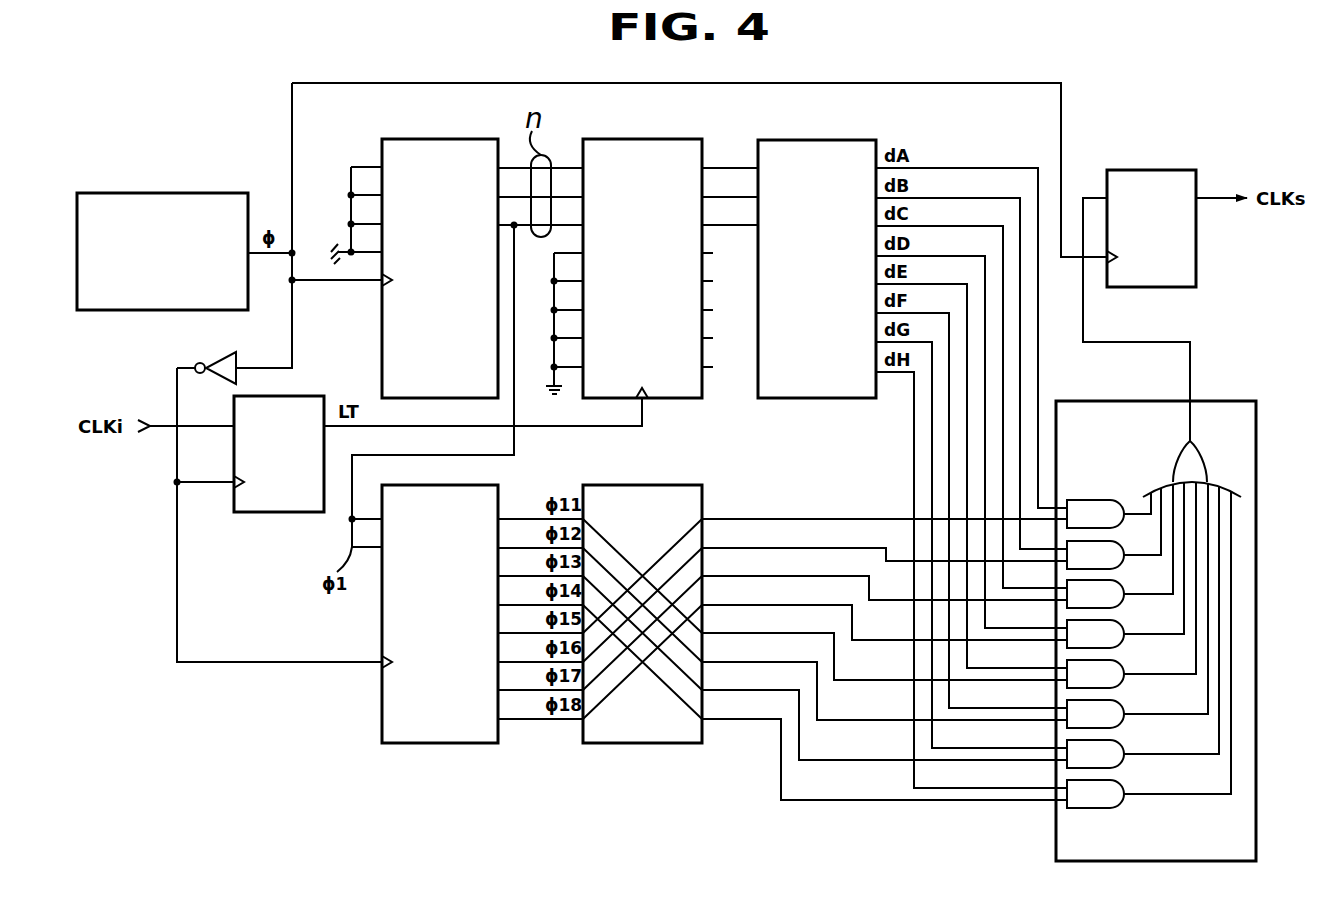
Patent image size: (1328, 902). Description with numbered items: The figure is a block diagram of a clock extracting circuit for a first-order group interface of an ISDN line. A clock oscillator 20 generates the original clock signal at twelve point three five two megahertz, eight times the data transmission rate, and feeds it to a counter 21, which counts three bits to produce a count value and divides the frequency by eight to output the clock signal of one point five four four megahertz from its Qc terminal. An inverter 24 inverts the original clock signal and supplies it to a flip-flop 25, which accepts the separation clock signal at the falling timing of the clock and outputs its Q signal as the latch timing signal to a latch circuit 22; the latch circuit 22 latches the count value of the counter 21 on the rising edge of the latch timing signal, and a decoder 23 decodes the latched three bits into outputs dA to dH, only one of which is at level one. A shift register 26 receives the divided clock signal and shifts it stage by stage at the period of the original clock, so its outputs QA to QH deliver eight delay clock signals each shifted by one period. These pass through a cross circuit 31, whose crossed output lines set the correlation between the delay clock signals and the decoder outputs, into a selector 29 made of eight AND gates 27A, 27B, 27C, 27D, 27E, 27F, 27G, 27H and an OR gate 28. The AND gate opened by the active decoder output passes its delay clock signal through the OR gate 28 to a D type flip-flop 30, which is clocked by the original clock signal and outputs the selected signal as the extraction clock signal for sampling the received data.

The clock oscillator 20 is at (183, 193).
The counter 21 is at (440, 138).
The latch circuit 22 is at (643, 138).
The decoder 23 is at (813, 140).
The inverter 24 is at (218, 358).
The flip-flop 25 is at (273, 512).
The shift register 26 is at (437, 743).
The AND gate 27A is at (1109, 510).
The AND gate 27B is at (1114, 528).
The AND gate 27C is at (1120, 546).
The AND gate 27D is at (1125, 565).
The AND gate 27E is at (1131, 585).
The AND gate 27F is at (1137, 606).
The AND gate 27G is at (1143, 627).
The AND gate 27H is at (1149, 650).
The OR gate 28 is at (1174, 458).
The selector 29 is at (1056, 824).
The D type flip-flop 30 is at (1146, 170).
The cross circuit 31 is at (630, 743).